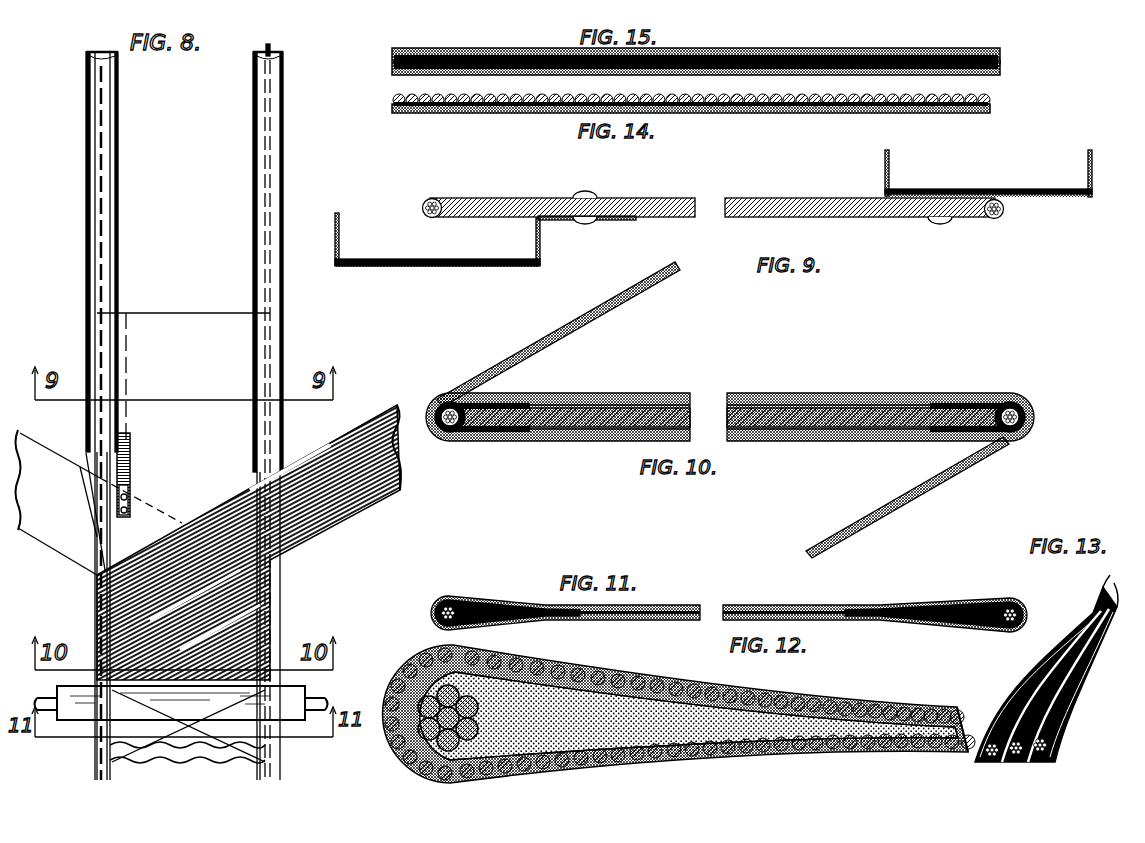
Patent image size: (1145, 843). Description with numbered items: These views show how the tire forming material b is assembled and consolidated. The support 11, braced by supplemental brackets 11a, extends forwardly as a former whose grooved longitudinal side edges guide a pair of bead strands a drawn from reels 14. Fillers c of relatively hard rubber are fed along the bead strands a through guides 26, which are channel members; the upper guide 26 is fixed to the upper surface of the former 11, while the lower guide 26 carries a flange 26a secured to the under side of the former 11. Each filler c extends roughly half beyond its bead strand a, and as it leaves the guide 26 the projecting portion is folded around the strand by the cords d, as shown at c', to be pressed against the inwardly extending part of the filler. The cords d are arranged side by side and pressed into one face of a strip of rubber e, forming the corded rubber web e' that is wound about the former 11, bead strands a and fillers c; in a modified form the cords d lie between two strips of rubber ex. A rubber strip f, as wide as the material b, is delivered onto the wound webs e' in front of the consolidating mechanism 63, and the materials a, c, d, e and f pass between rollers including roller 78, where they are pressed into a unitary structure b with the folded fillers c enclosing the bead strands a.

In FIG. 8, the guide 26 is at (262, 58).
In FIG. 9, the guide 26 is at (423, 267).
In FIG. 8, the flange 26a is at (128, 380).
In FIG. 9, the flange 26a is at (556, 221).
In FIG. 8, the support 11 is at (173, 318).
In FIG. 9, the support 11 is at (852, 218).
In FIG. 10, the support 11 is at (604, 428).
In FIG. 8, the supplemental bracket 11a is at (130, 470).
In FIG. 8, the reel 14 is at (316, 434).
In FIG. 8, the consolidating mechanism 63 is at (202, 691).
In FIG. 8, the roller 78 is at (82, 722).
In FIG. 8, the bead material a is at (266, 48).
In FIG. 14, the bead material a is at (465, 112).
In FIG. 9, the bead material a is at (427, 200).
In FIG. 10, the bead material a is at (470, 438).
In FIG. 11, the bead material a is at (729, 614).
In FIG. 12, the bead material a is at (448, 718).
In FIG. 13, the bead material a is at (992, 762).
In FIG. 8, the tire forming material b is at (250, 742).
In FIG. 11, the tire forming material b is at (690, 605).
In FIG. 12, the tire forming material b is at (900, 707).
In FIG. 13, the tire forming material b is at (1108, 598).
In FIG. 8, the filler c is at (154, 339).
In FIG. 9, the filler c is at (688, 208).
In FIG. 8, the folded filler portion c' is at (209, 496).
In FIG. 10, the folded filler portion c' is at (723, 417).
In FIG. 8, the cord d is at (384, 412).
In FIG. 15, the cord d is at (778, 48).
In FIG. 14, the cord d is at (884, 113).
In FIG. 10, the cord d is at (548, 347).
In FIG. 12, the cord d is at (718, 686).
In FIG. 8, the strip of rubber e is at (216, 494).
In FIG. 14, the strip of rubber e is at (824, 125).
In FIG. 10, the strip of rubber e is at (730, 420).
In FIG. 12, the strip of rubber e is at (675, 711).
In FIG. 8, the corded rubber web e' is at (197, 560).
In FIG. 14, the corded rubber web e' is at (691, 119).
In FIG. 10, the corded rubber web e' is at (723, 410).
In FIG. 15, the strip of rubber ex is at (952, 78).
In FIG. 8, the rubber strip f is at (185, 742).
In FIG. 11, the rubber strip f is at (500, 600).
In FIG. 12, the rubber strip f is at (788, 698).